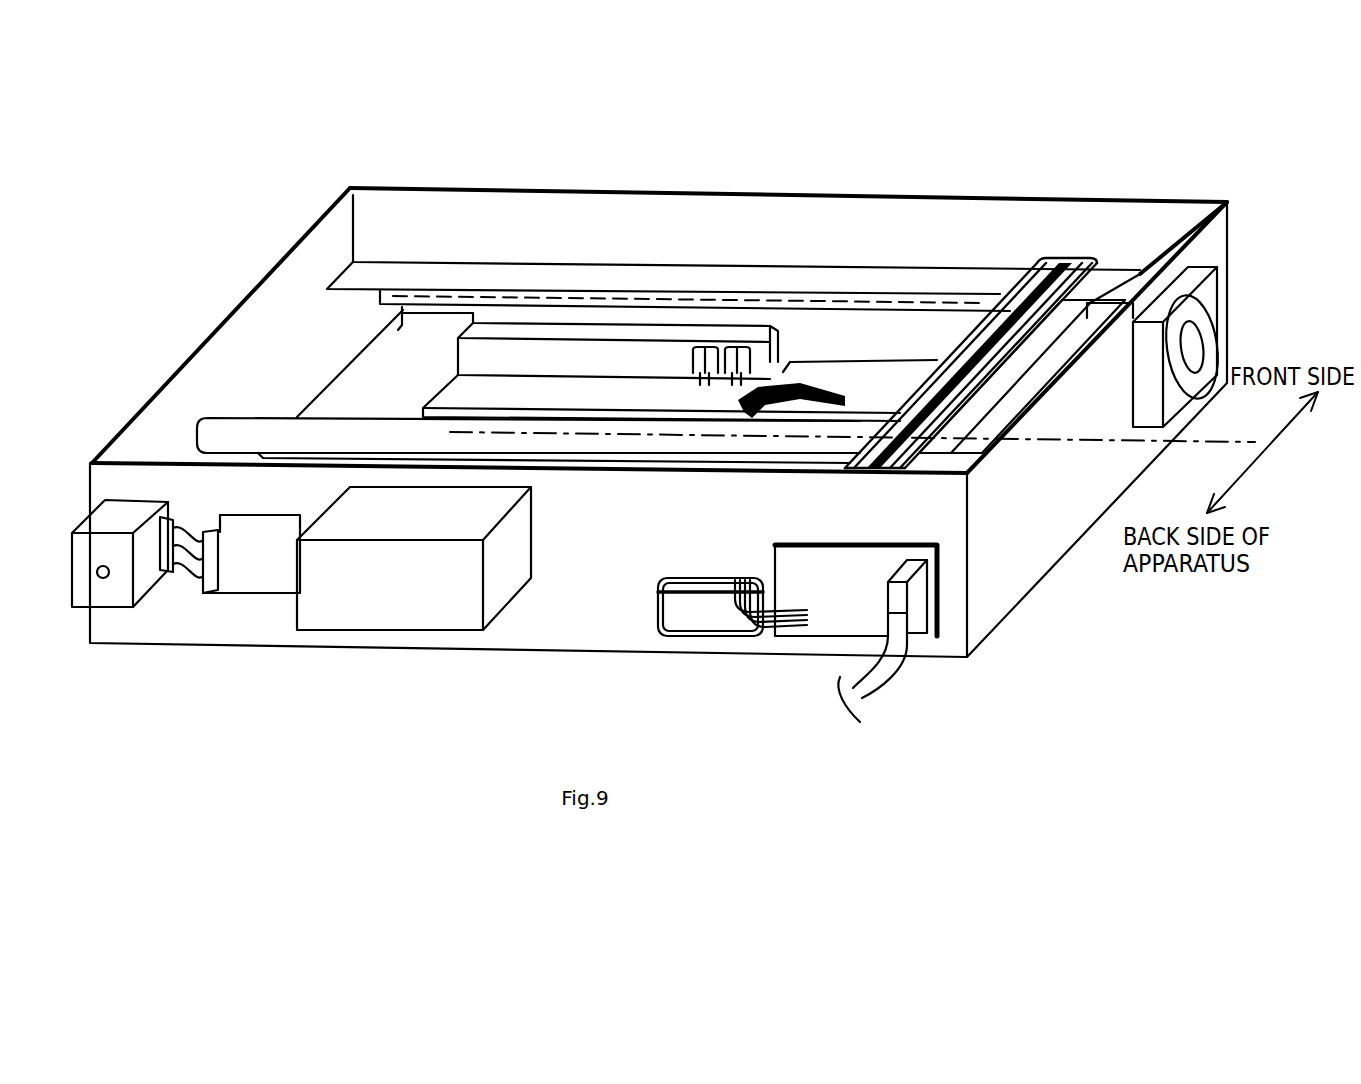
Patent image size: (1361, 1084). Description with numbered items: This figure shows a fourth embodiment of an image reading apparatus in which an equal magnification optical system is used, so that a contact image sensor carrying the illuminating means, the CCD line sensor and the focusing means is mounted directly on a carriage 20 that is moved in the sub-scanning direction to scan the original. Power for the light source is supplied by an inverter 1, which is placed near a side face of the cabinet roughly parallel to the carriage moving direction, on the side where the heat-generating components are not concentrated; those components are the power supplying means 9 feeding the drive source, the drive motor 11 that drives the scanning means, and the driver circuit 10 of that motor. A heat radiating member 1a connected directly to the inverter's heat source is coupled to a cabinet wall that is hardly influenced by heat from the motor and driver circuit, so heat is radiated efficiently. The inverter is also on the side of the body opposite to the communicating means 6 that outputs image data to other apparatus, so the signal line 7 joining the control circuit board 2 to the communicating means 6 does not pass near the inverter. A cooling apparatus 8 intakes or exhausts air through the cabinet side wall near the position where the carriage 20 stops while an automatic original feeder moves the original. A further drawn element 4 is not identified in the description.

The inverter 1 is at (683, 403).
The heat radiating member 1a is at (772, 358).
The control circuit board 2 is at (873, 373).
The carriage 20 is at (1090, 268).
The cooling apparatus 8 is at (1227, 342).
The apparatus housing 4 is at (1070, 443).
The communicating means 6 is at (913, 612).
The signal line 7 is at (752, 638).
The power supplying means 9 is at (417, 578).
The driver circuit 10 is at (265, 563).
The drive motor 11 is at (87, 567).